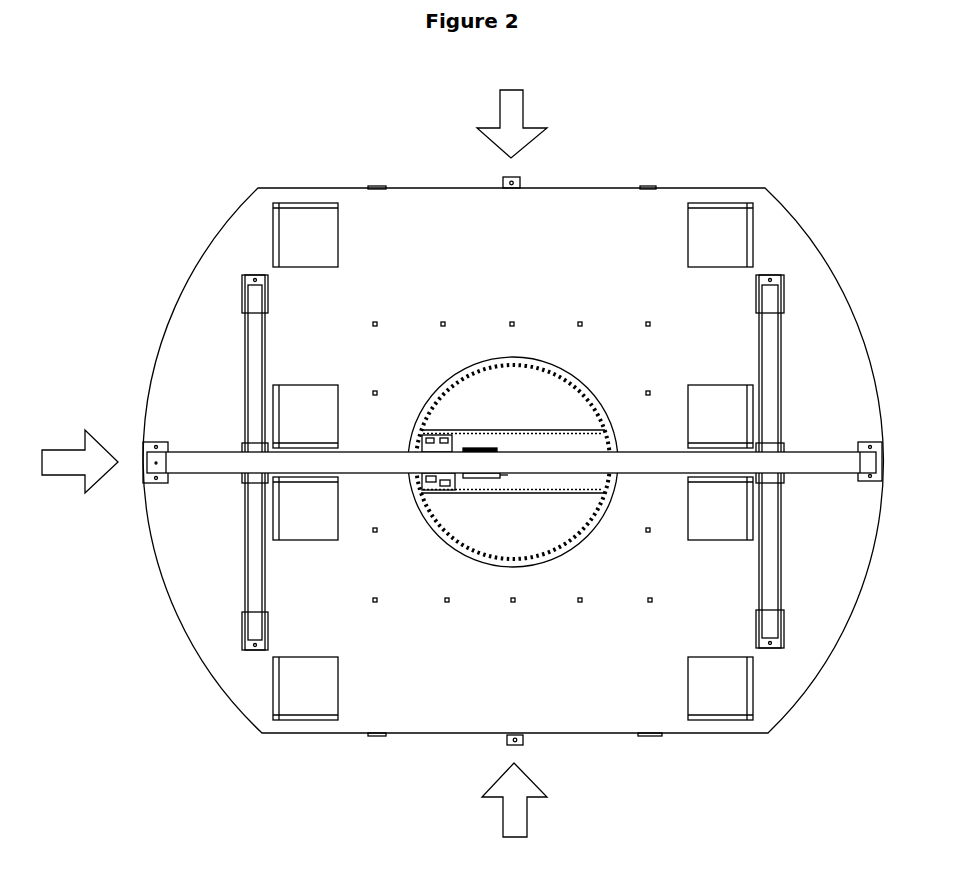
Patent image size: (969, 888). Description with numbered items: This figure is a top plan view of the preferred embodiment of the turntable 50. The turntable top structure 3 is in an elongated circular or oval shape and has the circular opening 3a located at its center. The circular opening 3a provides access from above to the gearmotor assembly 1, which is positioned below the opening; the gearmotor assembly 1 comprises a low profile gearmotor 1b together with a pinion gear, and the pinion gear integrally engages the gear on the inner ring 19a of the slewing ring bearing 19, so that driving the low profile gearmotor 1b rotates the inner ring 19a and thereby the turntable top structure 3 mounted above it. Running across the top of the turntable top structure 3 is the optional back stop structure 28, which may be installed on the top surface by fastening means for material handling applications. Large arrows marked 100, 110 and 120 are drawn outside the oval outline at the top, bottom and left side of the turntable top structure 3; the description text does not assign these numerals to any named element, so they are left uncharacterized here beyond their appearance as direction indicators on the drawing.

The gearmotor assembly 1 is at (455, 447).
The low profile gearmotor 1b is at (483, 450).
The turntable top structure 3 is at (513, 461).
The circular cut-out 3a is at (552, 523).
The slewing ring bearing 19 is at (443, 540).
The inner ring 19a is at (497, 562).
The back stop structure 28 is at (235, 467).
The turntable 50 is at (555, 486).
The first direction arrow 100 is at (512, 110).
The second direction arrow 110 is at (514, 817).
The third direction arrow 120 is at (80, 448).